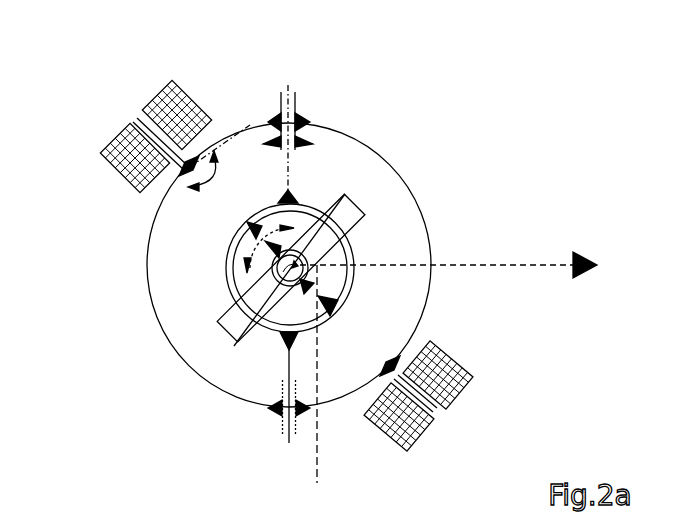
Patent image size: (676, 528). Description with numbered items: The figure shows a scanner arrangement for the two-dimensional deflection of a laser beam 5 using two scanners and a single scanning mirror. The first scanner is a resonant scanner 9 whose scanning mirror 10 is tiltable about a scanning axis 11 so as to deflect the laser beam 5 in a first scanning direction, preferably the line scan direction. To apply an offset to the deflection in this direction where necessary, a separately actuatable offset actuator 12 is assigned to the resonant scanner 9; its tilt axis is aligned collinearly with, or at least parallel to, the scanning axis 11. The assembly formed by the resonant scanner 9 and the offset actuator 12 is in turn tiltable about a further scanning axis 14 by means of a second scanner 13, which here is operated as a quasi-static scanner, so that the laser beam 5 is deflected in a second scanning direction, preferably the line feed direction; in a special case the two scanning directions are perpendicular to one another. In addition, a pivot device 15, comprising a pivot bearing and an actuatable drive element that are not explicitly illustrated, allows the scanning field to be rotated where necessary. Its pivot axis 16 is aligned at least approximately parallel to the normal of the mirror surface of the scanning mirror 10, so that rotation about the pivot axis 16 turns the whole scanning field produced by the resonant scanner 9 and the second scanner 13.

The laser beam 5 is at (317, 443).
The resonant scanner 9 is at (318, 270).
The scanning mirror 10 is at (234, 346).
The scanning axis 11 is at (363, 206).
The offset actuator 12 is at (228, 278).
The second scanner 13 is at (353, 133).
The scanning axis 14 is at (287, 90).
The pivot device 15 is at (185, 172).
The pivot axis 16 is at (133, 115).